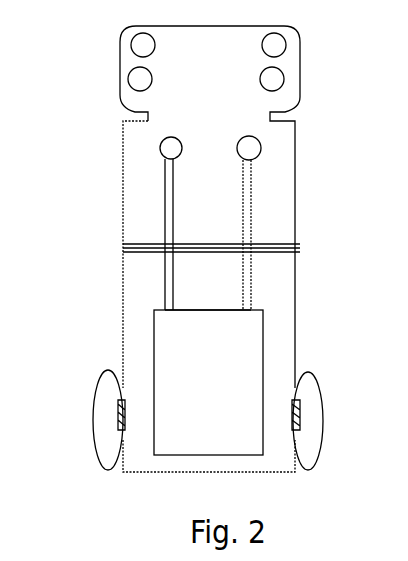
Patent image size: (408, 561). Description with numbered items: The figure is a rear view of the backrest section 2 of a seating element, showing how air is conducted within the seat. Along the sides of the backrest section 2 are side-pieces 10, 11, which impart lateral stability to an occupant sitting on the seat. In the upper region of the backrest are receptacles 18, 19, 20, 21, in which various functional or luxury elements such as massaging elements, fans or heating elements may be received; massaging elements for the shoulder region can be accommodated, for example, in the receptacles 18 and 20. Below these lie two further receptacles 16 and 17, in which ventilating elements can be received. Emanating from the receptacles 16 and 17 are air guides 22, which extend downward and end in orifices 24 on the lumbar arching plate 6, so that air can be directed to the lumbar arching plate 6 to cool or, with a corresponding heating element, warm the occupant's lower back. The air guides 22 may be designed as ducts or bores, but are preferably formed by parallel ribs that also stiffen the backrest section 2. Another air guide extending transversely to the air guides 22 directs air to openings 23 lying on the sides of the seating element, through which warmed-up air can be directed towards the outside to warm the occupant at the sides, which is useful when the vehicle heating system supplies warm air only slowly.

The backrest section 2 is at (343, 205).
The lumbar arching plate 6 is at (215, 393).
The side-piece 10 is at (93, 420).
The side-piece 11 is at (325, 418).
The receptacle 16 is at (161, 152).
The receptacle 17 is at (262, 148).
The receptacle 18 is at (128, 78).
The receptacle 19 is at (131, 43).
The receptacle 20 is at (285, 78).
The receptacle 21 is at (287, 42).
The air guides 22 is at (243, 203).
The openings 23 is at (123, 249).
The orifices 24 is at (242, 310).